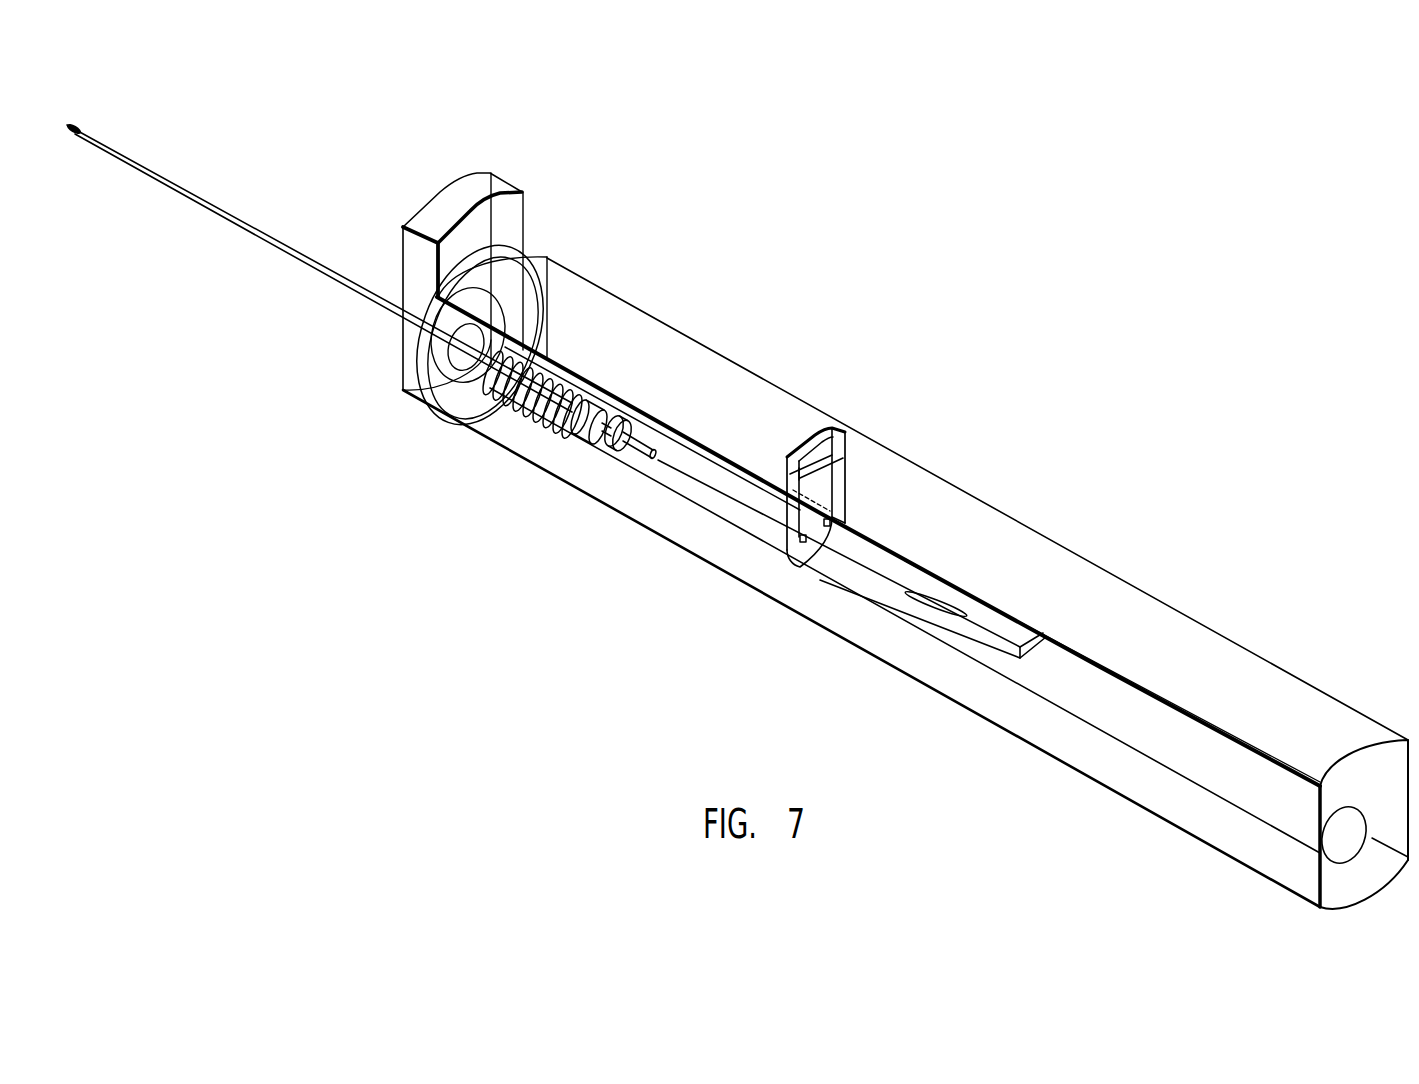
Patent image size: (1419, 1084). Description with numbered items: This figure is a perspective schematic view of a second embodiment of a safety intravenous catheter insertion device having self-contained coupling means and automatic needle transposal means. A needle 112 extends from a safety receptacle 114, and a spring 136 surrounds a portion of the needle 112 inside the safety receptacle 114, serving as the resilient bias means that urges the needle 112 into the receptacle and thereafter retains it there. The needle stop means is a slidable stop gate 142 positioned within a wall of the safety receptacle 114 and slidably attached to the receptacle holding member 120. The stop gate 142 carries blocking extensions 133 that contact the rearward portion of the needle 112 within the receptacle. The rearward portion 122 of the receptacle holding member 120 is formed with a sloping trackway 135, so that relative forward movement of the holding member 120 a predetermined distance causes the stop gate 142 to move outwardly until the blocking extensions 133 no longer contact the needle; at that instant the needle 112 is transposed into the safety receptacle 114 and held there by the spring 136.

The needle 112 is at (278, 237).
The safety receptacle 114 is at (1115, 607).
The receptacle holding member 120 is at (712, 466).
The rearward portion of the receptacle holding member 122 is at (939, 592).
The blocking extensions 133 is at (848, 534).
The sloping trackway 135 is at (943, 610).
The spring 136 is at (562, 372).
The slidable stop gate 142 is at (822, 481).